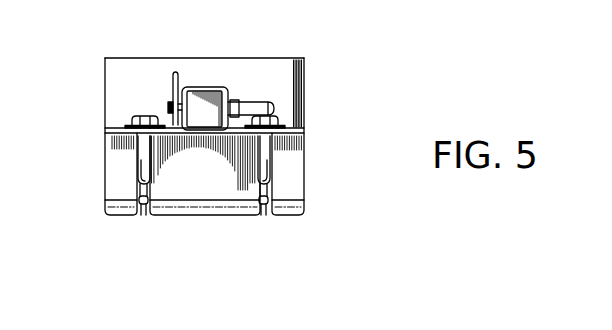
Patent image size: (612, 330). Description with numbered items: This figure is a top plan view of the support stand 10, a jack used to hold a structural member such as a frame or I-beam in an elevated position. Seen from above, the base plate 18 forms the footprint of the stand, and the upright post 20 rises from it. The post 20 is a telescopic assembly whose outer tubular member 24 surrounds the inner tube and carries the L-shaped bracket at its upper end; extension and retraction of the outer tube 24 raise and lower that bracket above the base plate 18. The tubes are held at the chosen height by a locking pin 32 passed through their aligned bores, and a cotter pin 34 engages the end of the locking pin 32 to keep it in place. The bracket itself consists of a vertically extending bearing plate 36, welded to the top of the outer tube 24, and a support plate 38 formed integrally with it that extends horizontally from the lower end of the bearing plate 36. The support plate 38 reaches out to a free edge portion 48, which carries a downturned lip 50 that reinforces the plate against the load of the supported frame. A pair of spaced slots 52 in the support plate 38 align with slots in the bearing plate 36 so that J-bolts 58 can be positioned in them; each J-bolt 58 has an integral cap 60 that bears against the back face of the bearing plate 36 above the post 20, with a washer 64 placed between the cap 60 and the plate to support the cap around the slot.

The support stand 10 is at (322, 93).
The base plate 18 is at (157, 63).
The upright post 20 is at (209, 78).
The outer tubular member 24 is at (228, 92).
The locking pin 32 is at (286, 104).
The cotter pin 34 is at (176, 73).
The bearing plate 36 is at (124, 133).
The support plate 38 is at (119, 192).
The free edge portion 48 is at (236, 204).
The downturned lip 50 is at (203, 218).
The slots 52 is at (144, 213).
The J-bolts 58 is at (138, 177).
The cap 60 is at (131, 115).
The washer 64 is at (129, 129).